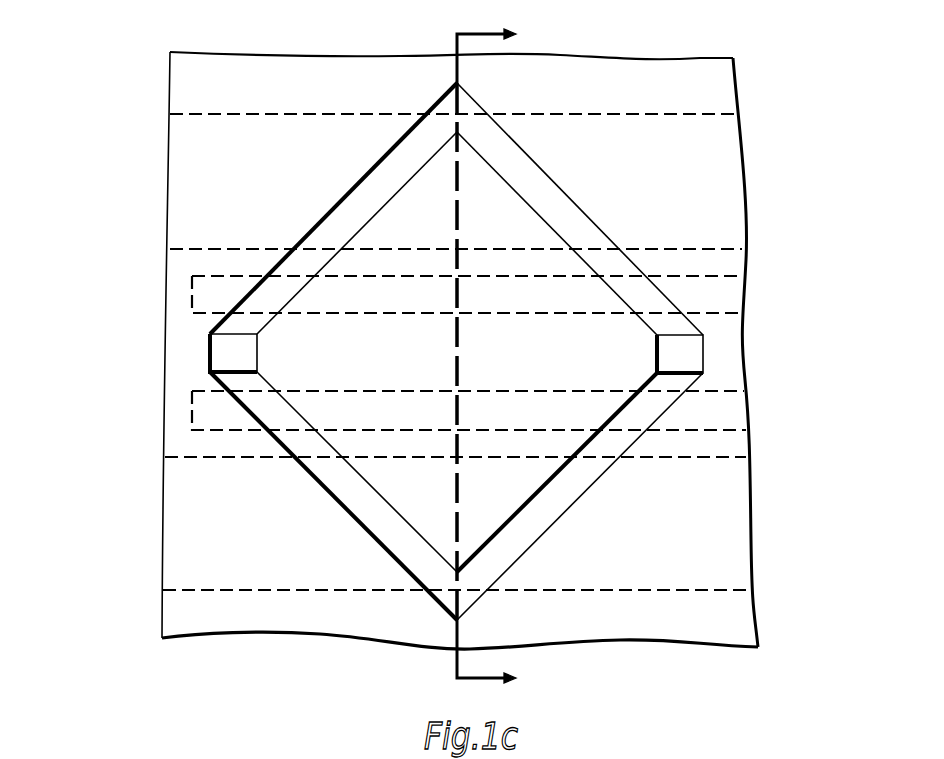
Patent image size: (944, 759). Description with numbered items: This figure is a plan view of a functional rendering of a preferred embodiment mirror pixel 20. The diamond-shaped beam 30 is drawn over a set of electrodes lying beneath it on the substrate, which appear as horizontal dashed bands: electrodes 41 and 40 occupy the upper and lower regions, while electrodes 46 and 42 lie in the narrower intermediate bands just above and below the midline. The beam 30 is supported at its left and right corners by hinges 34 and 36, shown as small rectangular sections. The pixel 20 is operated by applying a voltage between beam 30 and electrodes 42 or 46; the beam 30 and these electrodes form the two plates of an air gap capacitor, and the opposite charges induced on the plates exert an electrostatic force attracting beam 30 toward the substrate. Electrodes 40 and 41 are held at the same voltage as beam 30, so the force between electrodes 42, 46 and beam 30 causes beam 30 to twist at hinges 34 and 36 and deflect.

The pixel 20 is at (137, 467).
The beam 30 is at (513, 373).
The hinge 34 is at (257, 352).
The hinge 36 is at (668, 352).
The electrode 40 is at (762, 452).
The electrode 41 is at (762, 107).
The electrode 42 is at (762, 392).
The electrode 46 is at (762, 278).